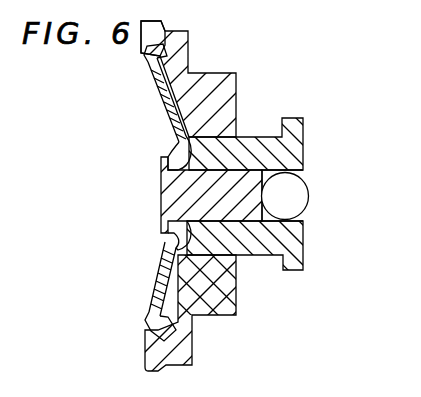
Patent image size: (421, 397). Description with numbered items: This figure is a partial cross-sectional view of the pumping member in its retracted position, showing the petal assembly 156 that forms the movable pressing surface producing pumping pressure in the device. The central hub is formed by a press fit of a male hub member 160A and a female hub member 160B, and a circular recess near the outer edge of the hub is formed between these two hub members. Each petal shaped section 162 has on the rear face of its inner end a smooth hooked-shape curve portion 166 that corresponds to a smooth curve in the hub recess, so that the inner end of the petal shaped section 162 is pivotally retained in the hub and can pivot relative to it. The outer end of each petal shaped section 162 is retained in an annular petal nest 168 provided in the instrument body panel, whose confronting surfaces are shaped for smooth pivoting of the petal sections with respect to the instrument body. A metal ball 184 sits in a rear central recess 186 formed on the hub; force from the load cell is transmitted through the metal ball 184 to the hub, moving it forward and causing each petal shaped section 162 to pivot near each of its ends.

The petal assembly 156 is at (124, 140).
The male hub member 160A is at (160, 203).
The female hub member 160B is at (305, 258).
The petal shaped section 162 is at (152, 104).
The hooked-shape curve portion 166 is at (236, 312).
The annular petal nest 168 is at (167, 58).
The metal ball 184 is at (307, 195).
The rear central recess 186 is at (267, 171).